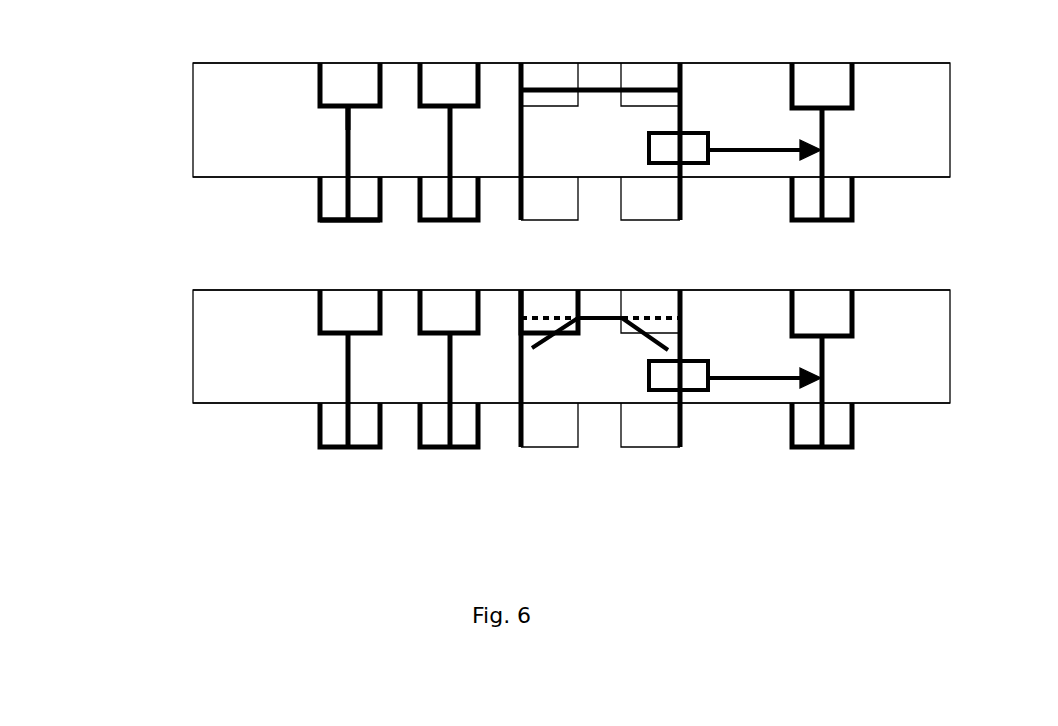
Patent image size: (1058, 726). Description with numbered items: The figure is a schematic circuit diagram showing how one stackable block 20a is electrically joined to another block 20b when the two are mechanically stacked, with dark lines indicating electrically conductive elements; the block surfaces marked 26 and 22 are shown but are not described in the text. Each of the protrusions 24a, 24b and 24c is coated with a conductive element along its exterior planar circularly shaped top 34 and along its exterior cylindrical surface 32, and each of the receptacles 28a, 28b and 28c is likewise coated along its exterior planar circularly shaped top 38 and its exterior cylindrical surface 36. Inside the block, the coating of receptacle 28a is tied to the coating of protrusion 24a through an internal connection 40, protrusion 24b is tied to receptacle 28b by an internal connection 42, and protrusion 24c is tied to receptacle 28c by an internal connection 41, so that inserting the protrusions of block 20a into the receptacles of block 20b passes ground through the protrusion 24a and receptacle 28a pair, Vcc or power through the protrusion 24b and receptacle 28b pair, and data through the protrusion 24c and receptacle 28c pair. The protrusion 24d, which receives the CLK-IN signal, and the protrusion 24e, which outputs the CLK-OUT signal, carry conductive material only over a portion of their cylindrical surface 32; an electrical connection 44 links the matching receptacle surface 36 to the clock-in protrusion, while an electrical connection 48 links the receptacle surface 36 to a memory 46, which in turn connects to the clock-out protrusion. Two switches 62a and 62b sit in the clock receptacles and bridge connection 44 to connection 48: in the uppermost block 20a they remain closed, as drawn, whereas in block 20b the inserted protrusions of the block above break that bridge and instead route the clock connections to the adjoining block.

The block 20a is at (256, 140).
The block 20b is at (258, 356).
The top surface of card 26 is at (227, 63).
The bottom surface of card 22 is at (217, 177).
The exterior cylindrical surface 36 is at (318, 80).
The exterior planar circularly shaped top 38 is at (337, 107).
The connection 40 is at (350, 137).
The internal connection 42 is at (452, 137).
The electrical connection 44 is at (523, 137).
The memory 46 is at (680, 152).
The electrical connection 48 is at (682, 121).
The internal connection 41 is at (824, 137).
The exterior cylindrical surface 32 is at (320, 195).
The exterior planar circularly shaped top 34 is at (338, 222).
The switch 62a is at (550, 95).
The switch 62b is at (650, 95).
The receptacle 28a is at (350, 307).
The receptacle 28b is at (450, 307).
The receptacle 28c is at (550, 307).
The protrusion 24a is at (350, 394).
The protrusion 24b is at (449, 394).
The protrusion 24c is at (822, 438).
The protrusion 24d is at (595, 412).
The protrusion 24e is at (721, 411).